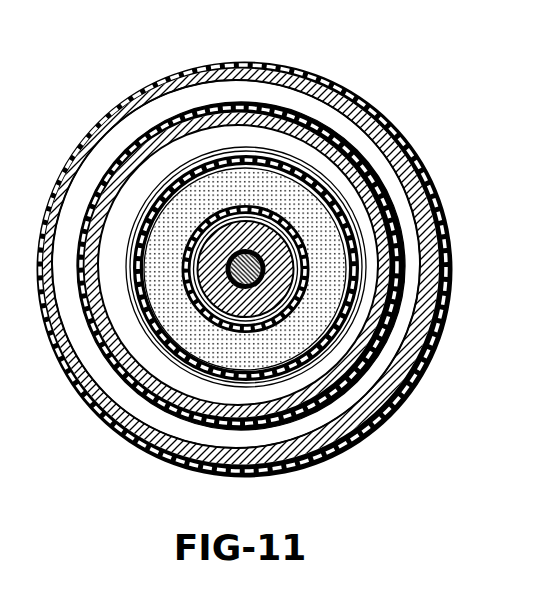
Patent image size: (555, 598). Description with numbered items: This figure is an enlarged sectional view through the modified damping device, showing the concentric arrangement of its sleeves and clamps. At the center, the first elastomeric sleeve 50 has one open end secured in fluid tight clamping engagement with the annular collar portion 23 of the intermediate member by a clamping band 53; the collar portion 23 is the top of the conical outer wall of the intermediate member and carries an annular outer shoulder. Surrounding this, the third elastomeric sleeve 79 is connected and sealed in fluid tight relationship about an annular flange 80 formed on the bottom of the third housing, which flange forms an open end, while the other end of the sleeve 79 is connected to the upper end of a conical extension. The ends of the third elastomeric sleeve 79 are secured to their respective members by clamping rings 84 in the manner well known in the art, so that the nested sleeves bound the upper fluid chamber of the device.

The annular collar portion 23 is at (270, 298).
The first elastomeric sleeve 50 is at (267, 172).
The clamping band 53 is at (208, 222).
The third elastomeric sleeve 79 is at (420, 323).
The annular flange 80 is at (394, 188).
The clamping rings 84 is at (441, 225).